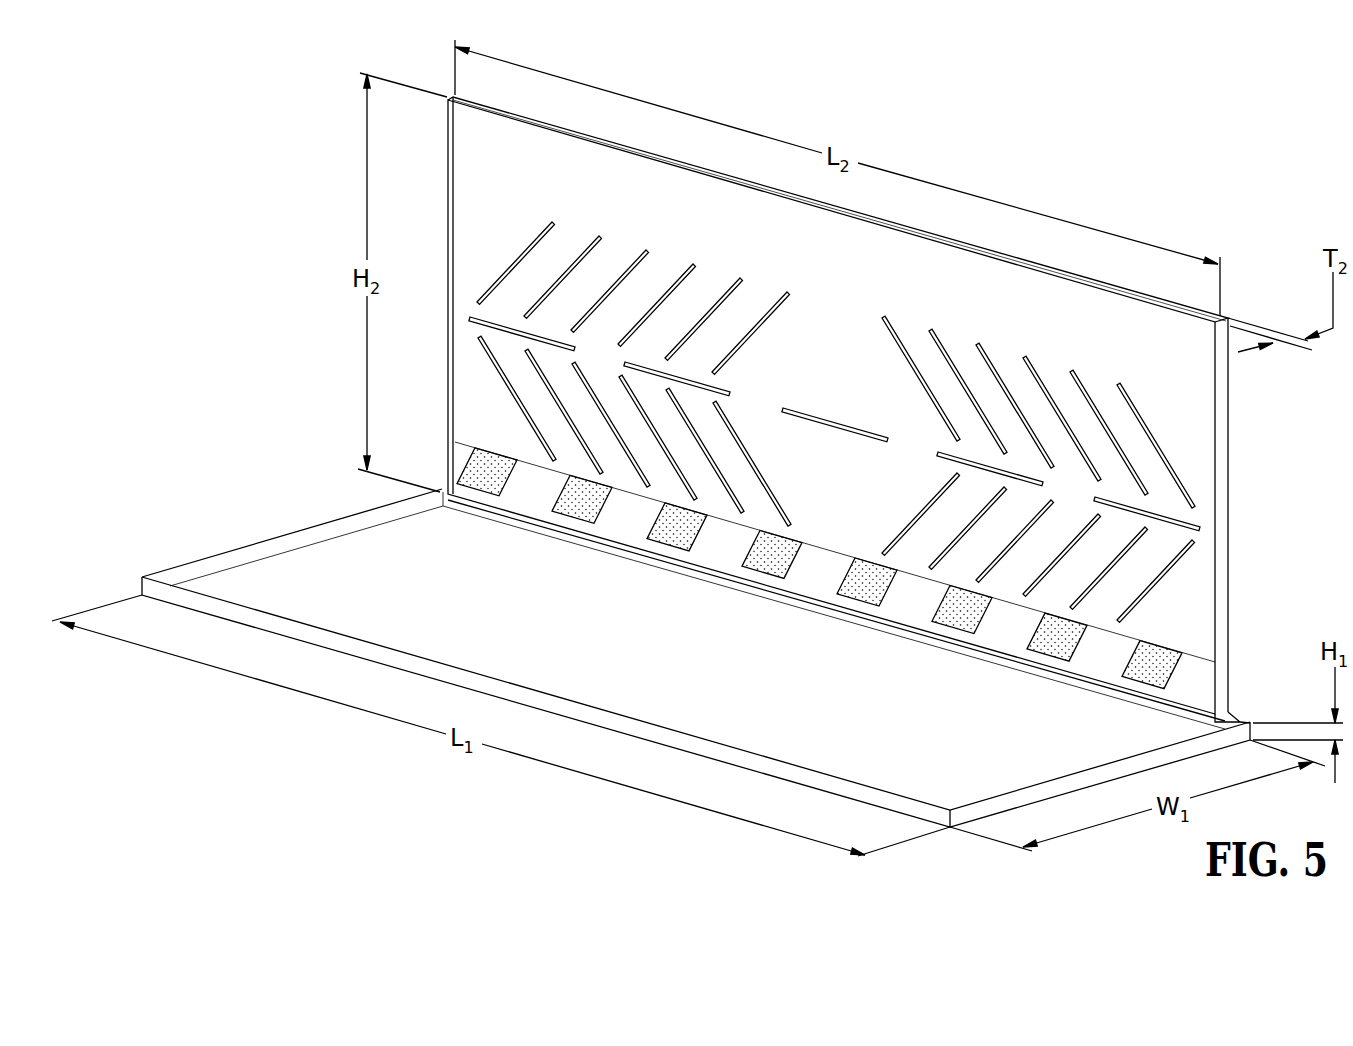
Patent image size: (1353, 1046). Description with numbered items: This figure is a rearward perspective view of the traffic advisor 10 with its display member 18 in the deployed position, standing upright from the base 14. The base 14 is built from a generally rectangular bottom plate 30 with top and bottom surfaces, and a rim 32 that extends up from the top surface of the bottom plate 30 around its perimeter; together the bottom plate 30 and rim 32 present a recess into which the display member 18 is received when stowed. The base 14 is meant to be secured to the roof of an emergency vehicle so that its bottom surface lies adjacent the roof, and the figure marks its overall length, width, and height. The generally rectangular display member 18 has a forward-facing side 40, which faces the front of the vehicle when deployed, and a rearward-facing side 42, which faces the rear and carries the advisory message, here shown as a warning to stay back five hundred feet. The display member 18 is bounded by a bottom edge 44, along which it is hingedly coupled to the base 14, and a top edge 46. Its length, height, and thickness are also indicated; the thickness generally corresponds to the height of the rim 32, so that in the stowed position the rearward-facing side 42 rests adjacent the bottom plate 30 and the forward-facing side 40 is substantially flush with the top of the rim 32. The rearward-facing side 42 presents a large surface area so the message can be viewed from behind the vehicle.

The traffic advisor 10 is at (302, 178).
The base 14 is at (228, 517).
The display member 18 is at (1275, 418).
The bottom plate 30 is at (345, 568).
The rim 32 is at (762, 763).
The forward-facing side 40 is at (1228, 318).
The rearward-facing side 42 is at (1212, 605).
The bottom edge 44 is at (1236, 719).
The top edge 46 is at (640, 155).